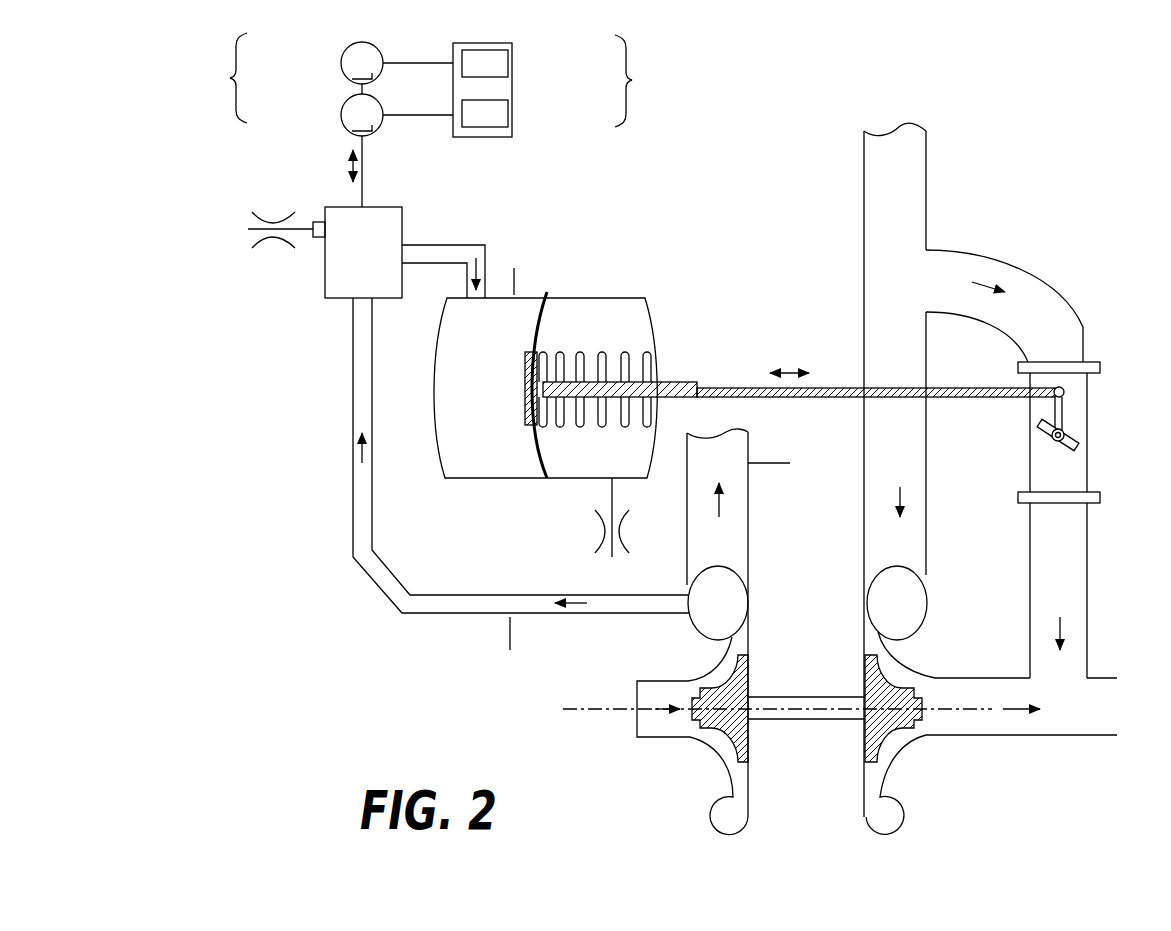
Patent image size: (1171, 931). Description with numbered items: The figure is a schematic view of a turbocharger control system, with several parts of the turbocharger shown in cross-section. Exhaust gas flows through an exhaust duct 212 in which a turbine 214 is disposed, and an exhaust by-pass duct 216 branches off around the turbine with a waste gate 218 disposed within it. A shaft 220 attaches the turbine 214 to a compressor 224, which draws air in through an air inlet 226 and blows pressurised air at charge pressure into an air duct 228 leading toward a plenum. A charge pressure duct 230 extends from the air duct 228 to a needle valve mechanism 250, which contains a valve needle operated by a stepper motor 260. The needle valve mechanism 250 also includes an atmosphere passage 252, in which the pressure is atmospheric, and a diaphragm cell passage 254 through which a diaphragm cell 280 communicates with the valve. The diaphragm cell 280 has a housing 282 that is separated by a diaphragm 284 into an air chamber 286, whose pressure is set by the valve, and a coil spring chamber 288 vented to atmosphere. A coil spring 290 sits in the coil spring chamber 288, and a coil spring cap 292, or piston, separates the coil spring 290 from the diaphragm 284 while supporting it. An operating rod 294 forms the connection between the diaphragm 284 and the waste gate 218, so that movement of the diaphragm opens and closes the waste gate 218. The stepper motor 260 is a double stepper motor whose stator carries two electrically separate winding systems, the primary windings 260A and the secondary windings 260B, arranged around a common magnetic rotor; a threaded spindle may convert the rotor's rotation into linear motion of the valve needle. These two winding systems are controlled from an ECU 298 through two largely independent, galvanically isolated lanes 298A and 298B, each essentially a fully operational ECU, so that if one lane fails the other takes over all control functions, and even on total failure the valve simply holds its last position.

The stepper motor 260 is at (228, 78).
The primary windings 260A is at (341, 112).
The secondary windings 260B is at (341, 57).
The ECU 298 is at (634, 80).
The first control lane 298A is at (512, 112).
The second control lane 298B is at (512, 55).
The needle valve mechanism 250 is at (340, 300).
The atmosphere passage 252 is at (318, 220).
The diaphragm cell passage 254 is at (428, 243).
The diaphragm cell 280 is at (614, 292).
The housing 282 is at (472, 478).
The diaphragm 284 is at (540, 320).
The air chamber 286 is at (523, 317).
The coil spring chamber 288 is at (640, 322).
The coil spring 290 is at (625, 357).
The coil spring cap 292 is at (535, 428).
The operating rod 294 is at (740, 385).
The charge pressure duct 230 is at (420, 618).
The air duct 228 is at (749, 537).
The air inlet 226 is at (637, 727).
The compressor 224 is at (750, 674).
The shaft 220 is at (789, 720).
The turbine 214 is at (864, 745).
The exhaust duct 212 is at (926, 440).
The exhaust by-pass duct 216 is at (1060, 260).
The waste gate 218 is at (1068, 434).